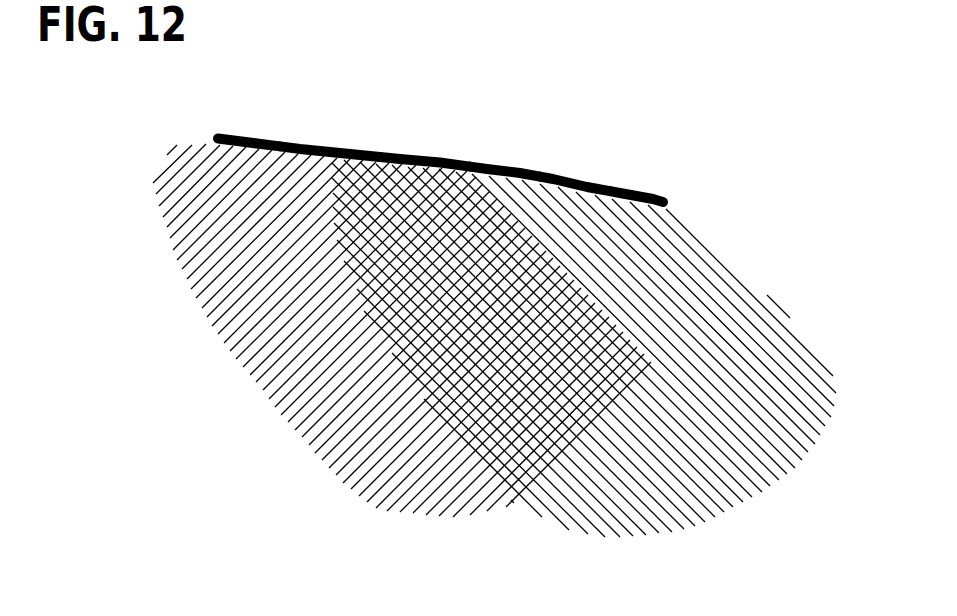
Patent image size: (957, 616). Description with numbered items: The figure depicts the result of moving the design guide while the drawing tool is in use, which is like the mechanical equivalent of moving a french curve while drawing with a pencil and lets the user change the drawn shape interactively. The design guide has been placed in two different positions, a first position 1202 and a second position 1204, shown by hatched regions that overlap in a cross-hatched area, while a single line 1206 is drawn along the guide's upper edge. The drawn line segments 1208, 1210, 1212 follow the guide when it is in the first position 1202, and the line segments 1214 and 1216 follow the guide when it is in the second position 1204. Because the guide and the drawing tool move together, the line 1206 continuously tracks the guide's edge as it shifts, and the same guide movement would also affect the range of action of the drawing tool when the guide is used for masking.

The first position 1202 is at (397, 450).
The second position 1204 is at (683, 418).
The line 1206 is at (612, 178).
The drawn line segment 1208 is at (237, 132).
The drawn line segment 1210 is at (323, 138).
The drawn line segment 1212 is at (430, 157).
The line segment 1214 is at (518, 160).
The line segment 1216 is at (665, 192).